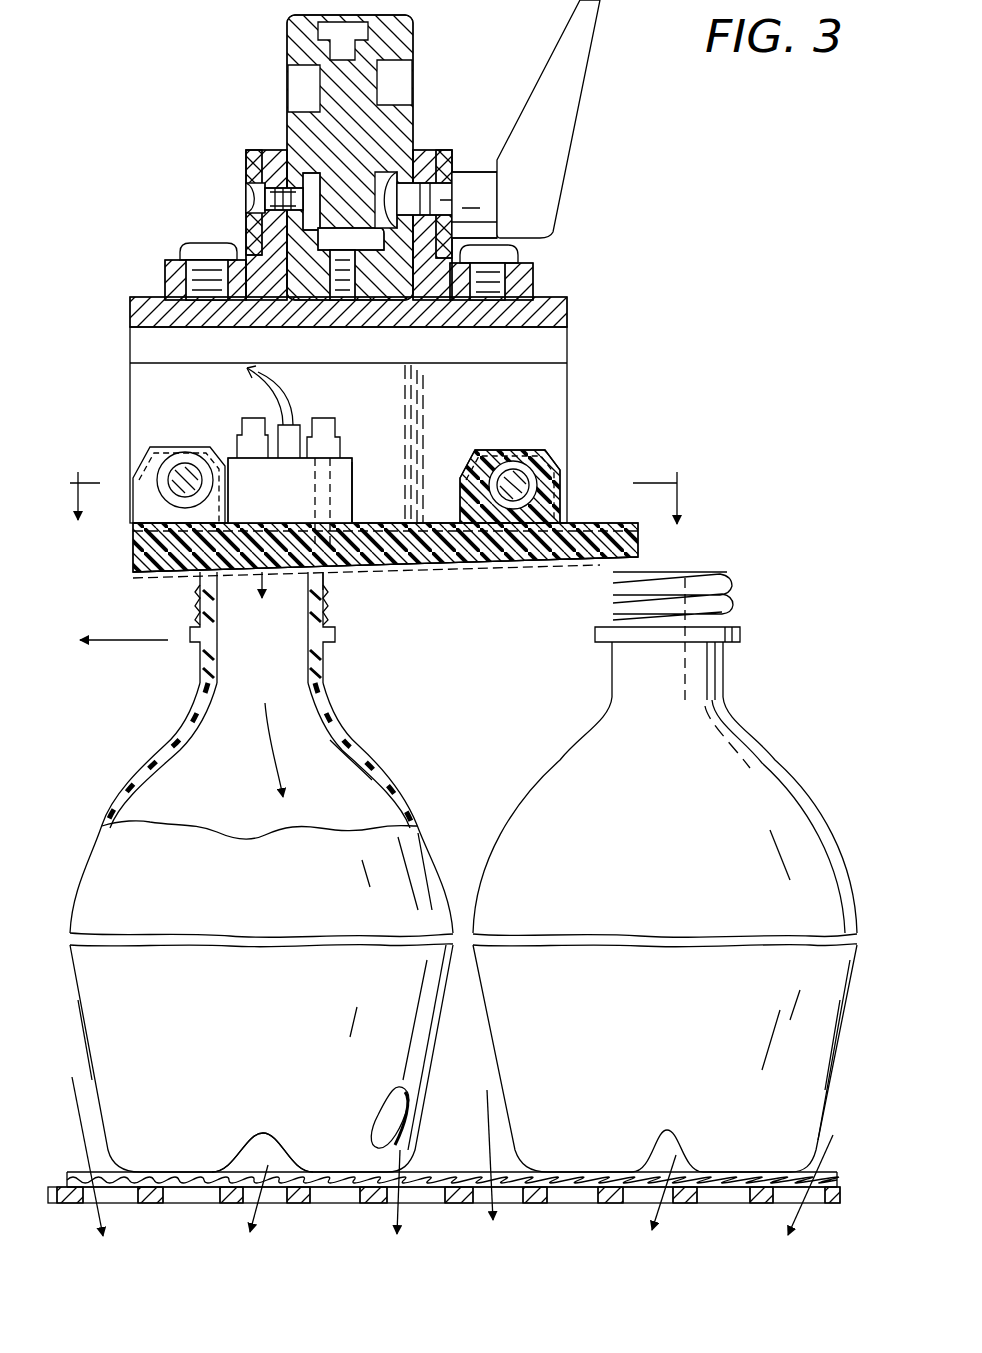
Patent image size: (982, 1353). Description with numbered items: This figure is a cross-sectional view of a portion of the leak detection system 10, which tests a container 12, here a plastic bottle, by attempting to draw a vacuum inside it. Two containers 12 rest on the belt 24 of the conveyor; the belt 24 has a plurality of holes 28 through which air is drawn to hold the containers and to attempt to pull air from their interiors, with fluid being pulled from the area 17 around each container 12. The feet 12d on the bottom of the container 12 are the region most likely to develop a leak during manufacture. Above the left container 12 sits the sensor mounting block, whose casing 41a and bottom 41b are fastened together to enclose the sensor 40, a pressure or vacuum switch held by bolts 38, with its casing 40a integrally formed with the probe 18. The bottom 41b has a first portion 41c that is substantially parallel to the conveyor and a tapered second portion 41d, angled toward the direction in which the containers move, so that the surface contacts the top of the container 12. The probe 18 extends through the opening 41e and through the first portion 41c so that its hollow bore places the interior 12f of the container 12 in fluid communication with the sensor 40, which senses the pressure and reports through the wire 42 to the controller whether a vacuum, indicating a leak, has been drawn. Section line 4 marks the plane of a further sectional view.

The section line 4- 4 is at (378, 484).
The leak detection system 10 is at (800, 212).
The container 12 is at (73, 853).
The feet 12d is at (160, 1172).
The interior 12f is at (353, 797).
The area around the container 17 is at (110, 777).
The probe 18 is at (215, 566).
The belt 24 is at (836, 1183).
The holes 28 is at (118, 1203).
The bolts 38 is at (255, 418).
The sensor 40 is at (352, 462).
The casing of the pressure switch 40a is at (360, 482).
The casing 41a is at (557, 383).
The bottom 41b is at (583, 537).
The first portion 41c is at (135, 566).
The second portion 41d is at (437, 594).
The opening 41e is at (322, 590).
The wire 42 is at (285, 410).